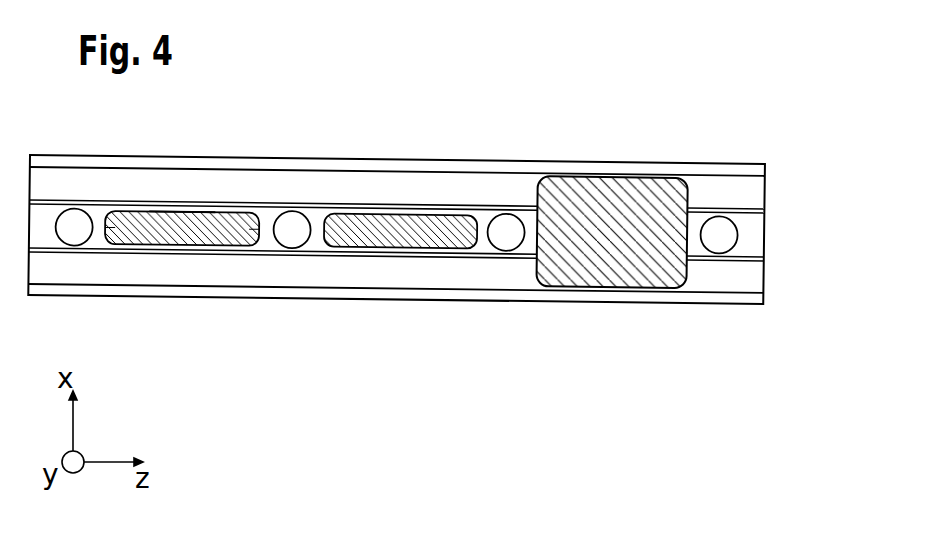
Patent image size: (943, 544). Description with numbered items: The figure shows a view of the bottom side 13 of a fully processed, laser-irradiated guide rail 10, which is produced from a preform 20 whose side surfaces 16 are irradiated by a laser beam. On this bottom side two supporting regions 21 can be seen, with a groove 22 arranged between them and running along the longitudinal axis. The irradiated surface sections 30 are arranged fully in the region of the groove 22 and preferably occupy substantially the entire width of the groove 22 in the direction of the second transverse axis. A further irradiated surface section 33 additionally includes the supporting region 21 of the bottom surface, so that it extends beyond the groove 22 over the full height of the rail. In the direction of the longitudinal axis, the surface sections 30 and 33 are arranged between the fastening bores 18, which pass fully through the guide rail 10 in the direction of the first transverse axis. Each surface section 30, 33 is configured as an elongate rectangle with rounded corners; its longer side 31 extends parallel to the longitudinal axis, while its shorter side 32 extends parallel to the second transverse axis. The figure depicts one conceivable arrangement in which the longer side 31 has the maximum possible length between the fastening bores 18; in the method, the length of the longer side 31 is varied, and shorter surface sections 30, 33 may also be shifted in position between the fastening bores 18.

The guide rail 10 is at (483, 165).
The preform 20 is at (395, 195).
The bottom side 13 is at (376, 186).
The side surface 16 is at (396, 177).
The supporting region 21 is at (742, 193).
The groove 22 is at (750, 231).
The fastening bore 18 is at (75, 235).
The surface section 30 is at (160, 230).
The longer side 31 is at (202, 212).
The shorter side 32 is at (105, 222).
The surface section 33 is at (608, 273).